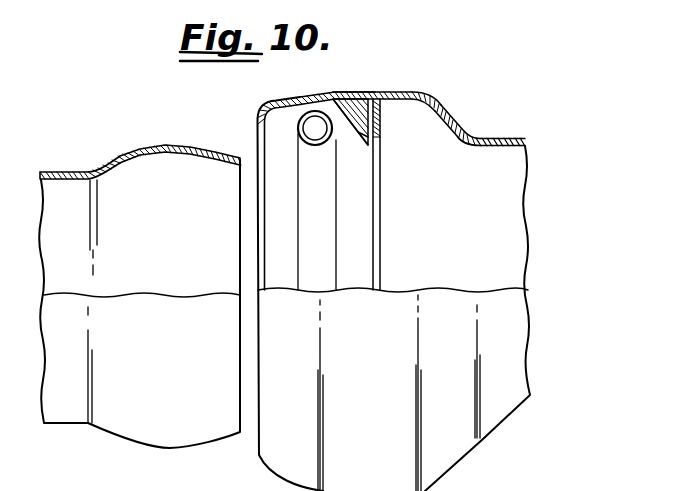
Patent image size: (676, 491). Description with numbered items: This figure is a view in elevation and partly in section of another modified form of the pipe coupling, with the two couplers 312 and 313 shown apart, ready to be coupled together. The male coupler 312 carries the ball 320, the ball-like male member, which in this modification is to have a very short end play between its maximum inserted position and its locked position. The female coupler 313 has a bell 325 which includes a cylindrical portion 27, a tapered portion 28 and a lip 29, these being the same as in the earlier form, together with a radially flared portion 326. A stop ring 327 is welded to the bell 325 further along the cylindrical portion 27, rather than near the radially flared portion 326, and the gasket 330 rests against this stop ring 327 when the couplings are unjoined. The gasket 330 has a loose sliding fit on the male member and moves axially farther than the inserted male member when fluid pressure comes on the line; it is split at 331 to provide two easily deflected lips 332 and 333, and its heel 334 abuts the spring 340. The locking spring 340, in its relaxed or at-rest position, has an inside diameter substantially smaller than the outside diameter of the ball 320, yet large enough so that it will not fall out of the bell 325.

The coupler 312 is at (77, 167).
The ball 320 is at (144, 147).
The lip 29 is at (258, 128).
The spring 340 is at (292, 122).
The tapered portion 28 is at (294, 125).
The heel 334 is at (332, 91).
The cylindrical portion 27 is at (346, 92).
The lip 332 is at (375, 99).
The split 331 is at (354, 118).
The stop ring 327 is at (383, 128).
The lip 333 is at (362, 146).
The gasket 330 is at (357, 144).
The bell 325 is at (433, 89).
The radially flared portion 326 is at (454, 118).
The female coupler 313 is at (513, 130).